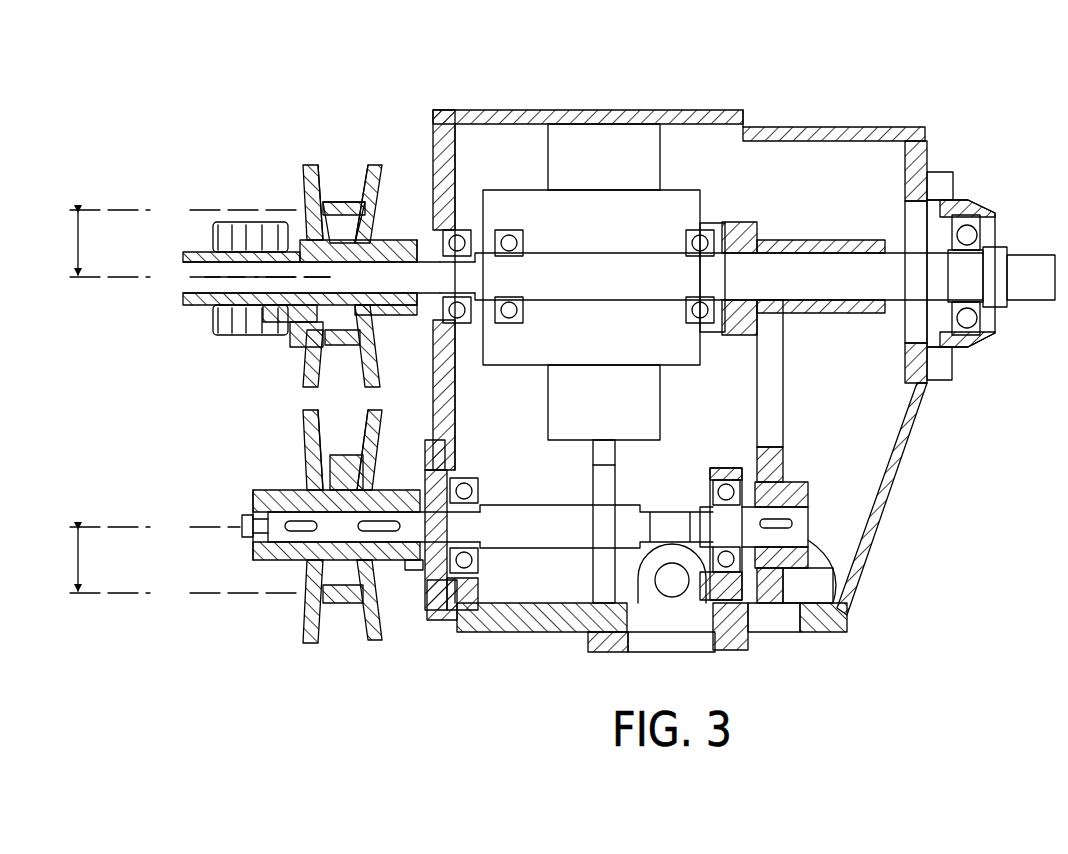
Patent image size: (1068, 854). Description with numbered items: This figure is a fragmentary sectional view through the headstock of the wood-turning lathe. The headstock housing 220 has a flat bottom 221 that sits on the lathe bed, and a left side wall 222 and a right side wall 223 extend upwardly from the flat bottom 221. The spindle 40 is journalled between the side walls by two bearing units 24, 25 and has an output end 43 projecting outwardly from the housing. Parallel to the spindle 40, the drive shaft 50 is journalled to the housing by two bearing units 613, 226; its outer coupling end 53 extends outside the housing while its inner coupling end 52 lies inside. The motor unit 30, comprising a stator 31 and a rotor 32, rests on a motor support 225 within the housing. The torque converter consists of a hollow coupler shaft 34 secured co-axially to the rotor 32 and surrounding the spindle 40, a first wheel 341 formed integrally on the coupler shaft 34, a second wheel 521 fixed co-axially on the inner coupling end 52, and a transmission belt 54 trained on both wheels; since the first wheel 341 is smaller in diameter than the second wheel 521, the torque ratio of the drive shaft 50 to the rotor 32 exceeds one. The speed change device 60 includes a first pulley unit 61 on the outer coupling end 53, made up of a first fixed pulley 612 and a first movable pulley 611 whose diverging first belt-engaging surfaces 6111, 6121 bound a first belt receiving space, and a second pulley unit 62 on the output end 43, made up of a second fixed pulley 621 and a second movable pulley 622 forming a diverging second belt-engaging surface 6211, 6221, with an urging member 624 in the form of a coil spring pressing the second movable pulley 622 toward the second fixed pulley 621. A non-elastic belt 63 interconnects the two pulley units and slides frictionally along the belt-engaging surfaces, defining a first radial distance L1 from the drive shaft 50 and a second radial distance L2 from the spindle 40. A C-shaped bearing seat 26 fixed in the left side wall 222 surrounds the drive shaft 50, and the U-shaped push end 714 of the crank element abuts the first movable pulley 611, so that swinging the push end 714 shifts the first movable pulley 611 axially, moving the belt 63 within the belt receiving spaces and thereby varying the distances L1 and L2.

The first radial distance L1 is at (172, 560).
The second radial distance L2 is at (187, 243).
The bearing unit 24 is at (457, 227).
The bearing unit 25 is at (963, 207).
The C-shaped bearing seat 26 is at (420, 460).
The motor unit 30 is at (542, 141).
The stator 31 is at (652, 140).
The rotor 32 is at (668, 197).
The hollow coupler shaft 34 is at (728, 222).
The first wheel 341 is at (770, 212).
The spindle 40 is at (858, 275).
The output end 43 is at (197, 273).
The drive shaft 50 is at (603, 362).
The inner coupling end 52 is at (835, 627).
The second wheel 521 is at (783, 460).
The outer coupling end 53 is at (285, 540).
The transmission belt 54 is at (775, 393).
The speed change device 60 is at (262, 490).
The first pulley unit 61 is at (322, 584).
The first movable pulley 611 is at (378, 640).
The first belt-engaging surface 6111 is at (343, 623).
The first fixed pulley 612 is at (307, 633).
The first belt-engaging surface 6121 is at (320, 630).
The bearing unit 613 is at (378, 567).
The second pulley unit 62 is at (316, 222).
The second fixed pulley 621 is at (370, 160).
The second belt-engaging surface 6211 is at (346, 200).
The second movable pulley 622 is at (312, 165).
The conical face 6221 is at (319, 170).
The urging member 624 is at (253, 222).
The non-elastic belt 63 is at (345, 385).
The U-shaped push end 714 is at (410, 570).
The headstock housing 220 is at (880, 128).
The flat bottom 221 is at (508, 610).
The left side wall 222 is at (473, 617).
The right side wall 223 is at (903, 483).
The motor support 225 is at (600, 452).
The bearing unit 226 is at (733, 473).